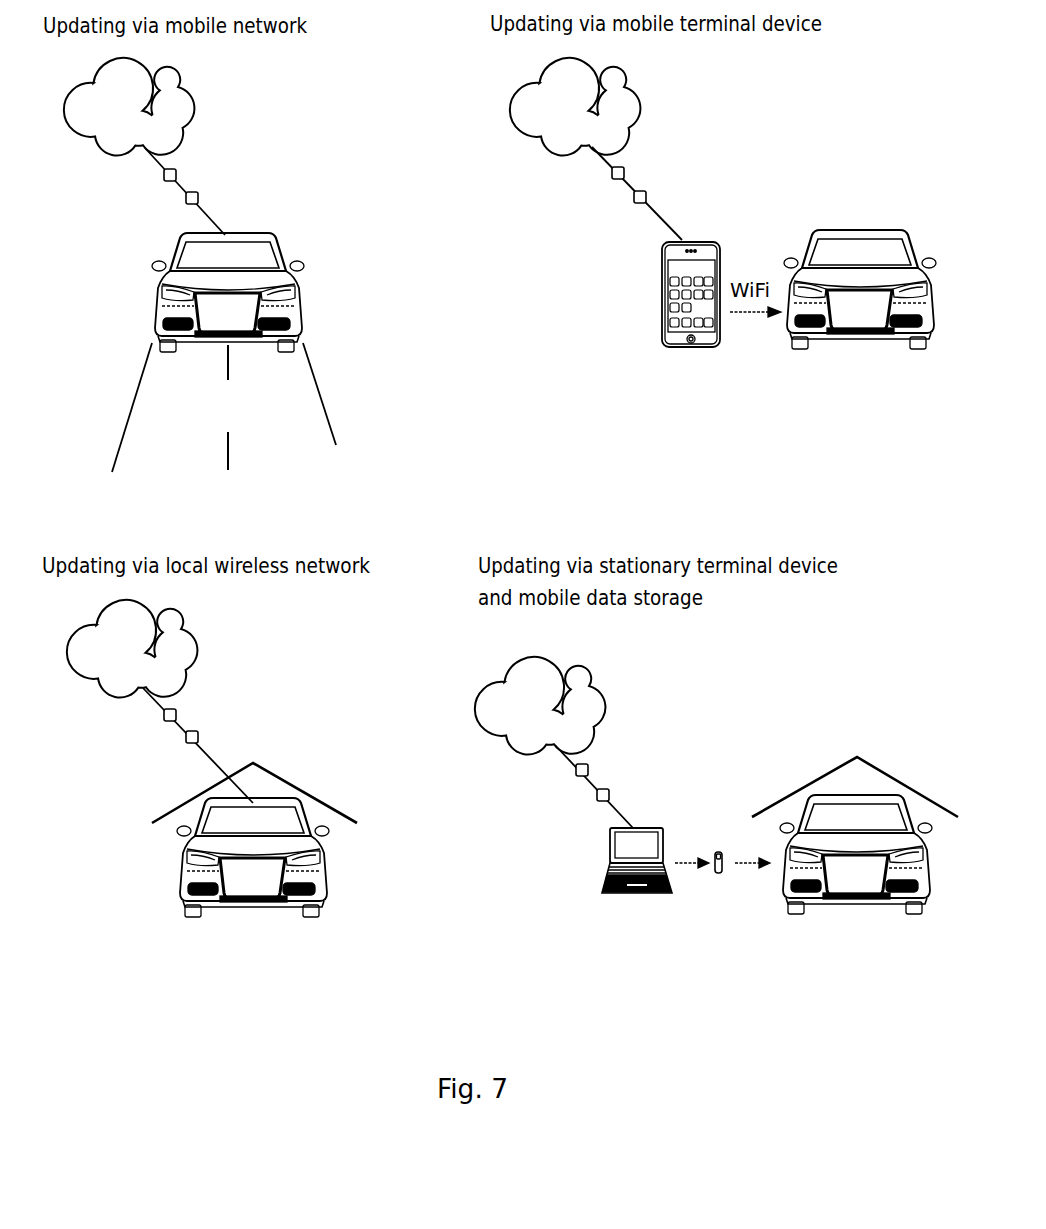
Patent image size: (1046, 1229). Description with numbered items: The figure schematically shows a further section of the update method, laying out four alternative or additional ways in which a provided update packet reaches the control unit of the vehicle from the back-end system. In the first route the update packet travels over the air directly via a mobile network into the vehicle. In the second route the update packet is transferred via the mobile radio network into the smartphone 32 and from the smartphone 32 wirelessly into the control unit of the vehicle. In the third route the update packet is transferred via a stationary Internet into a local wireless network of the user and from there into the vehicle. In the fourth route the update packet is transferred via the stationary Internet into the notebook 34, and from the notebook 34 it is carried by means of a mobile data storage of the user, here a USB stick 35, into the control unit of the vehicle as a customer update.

The smartphone 32 is at (662, 303).
The notebook 34 is at (641, 896).
The USB stick 35 is at (718, 877).